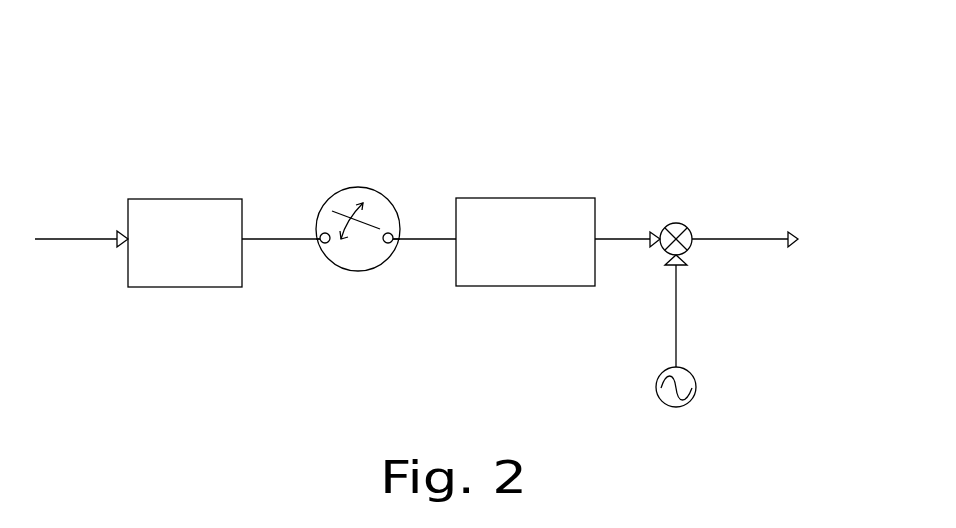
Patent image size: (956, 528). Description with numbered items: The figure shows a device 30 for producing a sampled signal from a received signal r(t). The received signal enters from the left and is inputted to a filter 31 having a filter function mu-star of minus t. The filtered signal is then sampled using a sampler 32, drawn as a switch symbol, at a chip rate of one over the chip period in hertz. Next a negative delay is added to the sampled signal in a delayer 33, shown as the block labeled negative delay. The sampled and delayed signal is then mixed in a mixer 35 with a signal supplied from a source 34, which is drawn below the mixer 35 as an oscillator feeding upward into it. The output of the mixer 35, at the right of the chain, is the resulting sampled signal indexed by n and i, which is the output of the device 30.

The device 30 is at (140, 117).
The filter 31 is at (177, 280).
The sampler 32 is at (362, 260).
The delayer 33 is at (528, 273).
The source 34 is at (697, 392).
The mixer 35 is at (668, 227).